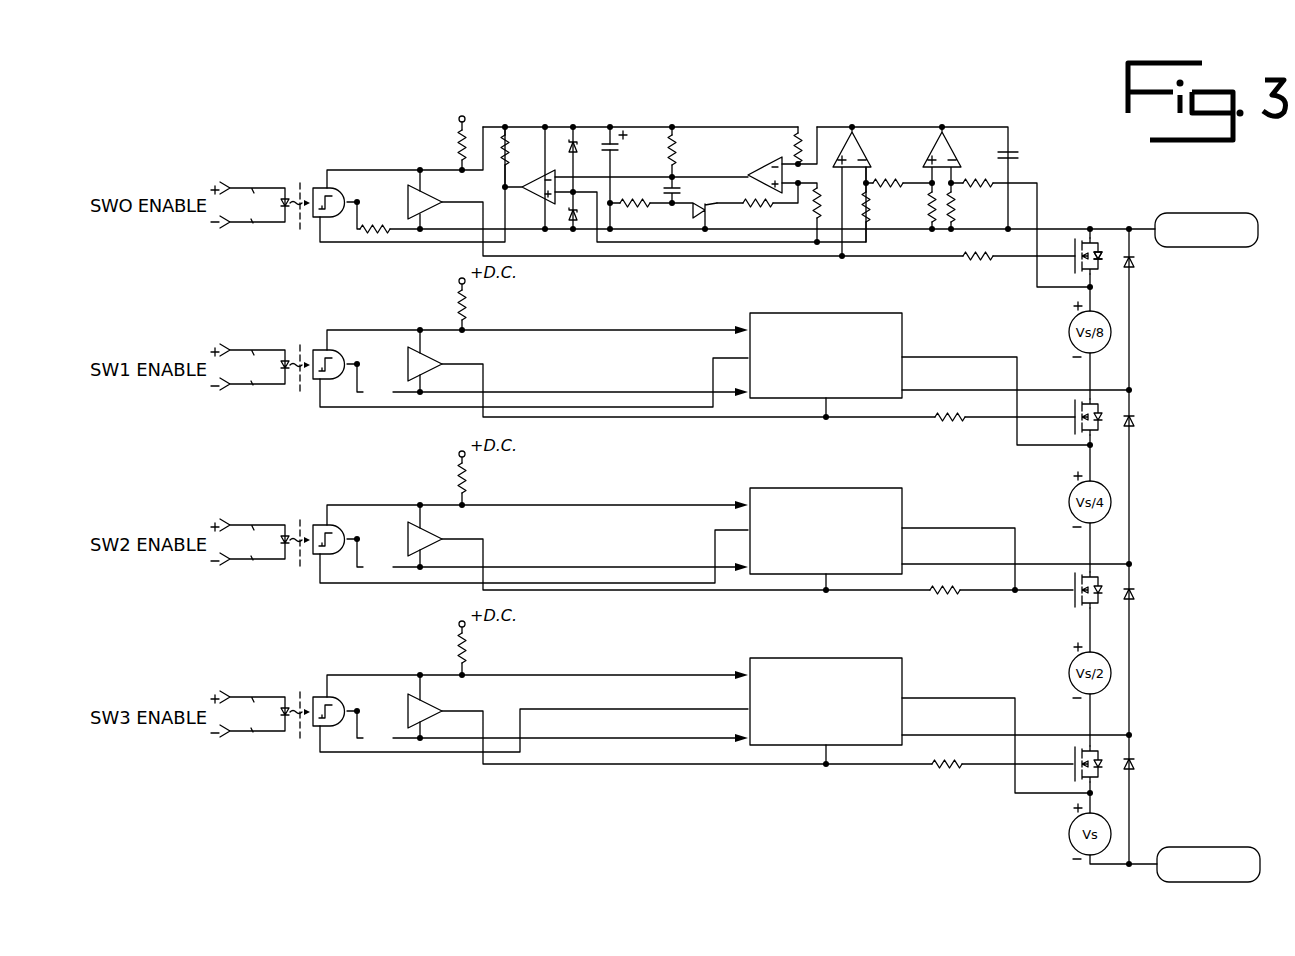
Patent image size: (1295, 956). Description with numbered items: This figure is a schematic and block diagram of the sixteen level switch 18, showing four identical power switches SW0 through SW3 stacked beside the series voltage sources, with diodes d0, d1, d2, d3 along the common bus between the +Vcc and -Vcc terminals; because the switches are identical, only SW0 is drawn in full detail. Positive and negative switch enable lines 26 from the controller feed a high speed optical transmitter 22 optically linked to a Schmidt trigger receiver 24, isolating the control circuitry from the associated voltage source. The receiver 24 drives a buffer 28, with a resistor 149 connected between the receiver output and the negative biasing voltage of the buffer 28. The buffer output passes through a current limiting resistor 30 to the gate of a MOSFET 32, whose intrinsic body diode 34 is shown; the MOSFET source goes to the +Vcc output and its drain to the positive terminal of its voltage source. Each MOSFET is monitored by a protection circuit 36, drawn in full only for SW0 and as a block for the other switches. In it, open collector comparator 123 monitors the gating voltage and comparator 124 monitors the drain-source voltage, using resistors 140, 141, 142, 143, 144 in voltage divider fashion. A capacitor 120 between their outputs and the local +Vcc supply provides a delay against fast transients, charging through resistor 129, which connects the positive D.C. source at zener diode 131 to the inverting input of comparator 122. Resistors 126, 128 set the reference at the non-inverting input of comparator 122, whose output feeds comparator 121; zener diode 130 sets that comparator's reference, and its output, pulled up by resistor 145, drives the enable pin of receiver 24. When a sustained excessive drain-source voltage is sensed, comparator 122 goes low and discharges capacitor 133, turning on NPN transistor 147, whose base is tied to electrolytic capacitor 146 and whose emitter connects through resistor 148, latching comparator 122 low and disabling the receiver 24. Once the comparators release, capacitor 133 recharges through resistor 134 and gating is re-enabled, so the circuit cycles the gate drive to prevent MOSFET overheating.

The sixteen level switch 18 is at (1205, 444).
The optical transmitter 22 is at (289, 201).
The Schmidt trigger receiver 24 is at (316, 219).
The switch enable lines 26 is at (248, 205).
The buffer 28 is at (425, 202).
The current limiting resistor 30 is at (976, 271).
The MOSFET 32 is at (1074, 258).
The body diode 34 is at (1099, 257).
The protection circuit 36 is at (722, 128).
The capacitor 120 is at (1010, 151).
The comparator 121 is at (530, 197).
The comparator 122 is at (761, 167).
The comparator 123 is at (861, 140).
The comparator 124 is at (950, 140).
The resistor 126 is at (758, 208).
The resistor 128 is at (811, 214).
The resistor 129 is at (800, 134).
The zener diode 130 is at (578, 143).
The zener diode 131 is at (458, 144).
The capacitor 133 is at (680, 192).
The resistor 134 is at (675, 154).
The resistor 140 is at (871, 218).
The resistor 141 is at (899, 169).
The resistor 142 is at (929, 200).
The resistor 143 is at (955, 218).
The resistor 144 is at (994, 164).
The pull up resistor 145 is at (508, 144).
The electrolytic capacitor 146 is at (614, 151).
The NPN transistor 147 is at (691, 220).
The resistor 148 is at (631, 206).
The resistor 149 is at (377, 219).
The diode d0 is at (1135, 264).
The diode d1 is at (1136, 424).
The diode d2 is at (1136, 598).
The diode d3 is at (1136, 767).